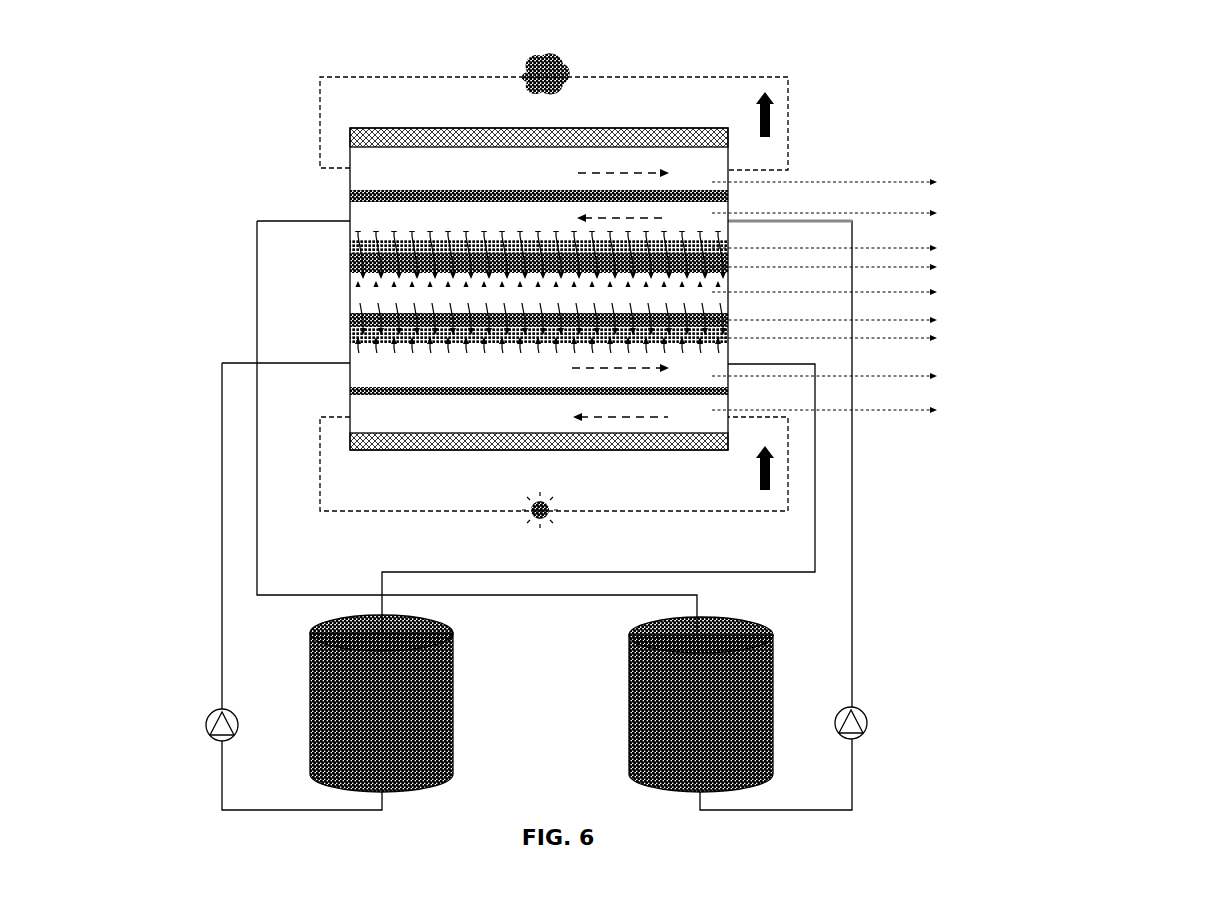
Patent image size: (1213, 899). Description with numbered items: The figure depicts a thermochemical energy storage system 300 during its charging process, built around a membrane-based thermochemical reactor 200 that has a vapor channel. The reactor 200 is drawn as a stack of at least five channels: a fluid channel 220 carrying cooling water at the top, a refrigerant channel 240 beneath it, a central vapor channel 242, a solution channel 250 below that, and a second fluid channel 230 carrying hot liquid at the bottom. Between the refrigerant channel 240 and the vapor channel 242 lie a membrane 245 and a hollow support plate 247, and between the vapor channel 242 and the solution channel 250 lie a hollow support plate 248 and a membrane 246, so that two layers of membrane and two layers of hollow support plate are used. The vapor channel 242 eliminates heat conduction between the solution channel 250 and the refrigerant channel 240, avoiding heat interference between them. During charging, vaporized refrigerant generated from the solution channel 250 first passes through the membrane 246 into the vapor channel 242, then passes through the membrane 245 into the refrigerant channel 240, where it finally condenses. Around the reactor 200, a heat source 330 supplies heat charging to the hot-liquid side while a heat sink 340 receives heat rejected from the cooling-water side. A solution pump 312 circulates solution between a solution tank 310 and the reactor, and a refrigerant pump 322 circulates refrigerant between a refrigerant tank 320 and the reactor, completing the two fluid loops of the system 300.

The thermochemical energy storage system 300 is at (808, 58).
The membrane-based reactor 200 is at (731, 157).
The fluid channel 220 is at (734, 170).
The refrigerant channel 240 is at (750, 217).
The vapor channel 242 is at (722, 293).
The membrane 245 is at (732, 245).
The hollow support plate 247 is at (732, 268).
The hollow support plate 248 is at (732, 316).
The membrane 246 is at (732, 343).
The solution channel 250 is at (736, 368).
The fluid channel 230 is at (734, 414).
The heat sink 340 is at (556, 64).
The heat source 330 is at (528, 518).
The solution tank 310 is at (455, 660).
The solution pump 312 is at (238, 712).
The refrigerant tank 320 is at (752, 665).
The refrigerant pump 322 is at (870, 728).